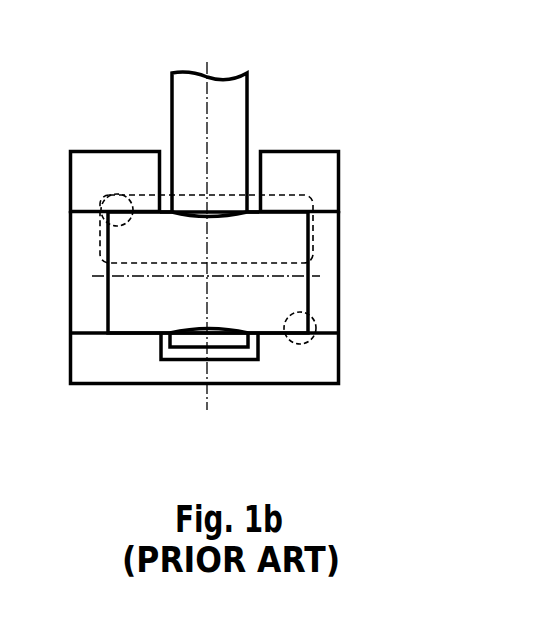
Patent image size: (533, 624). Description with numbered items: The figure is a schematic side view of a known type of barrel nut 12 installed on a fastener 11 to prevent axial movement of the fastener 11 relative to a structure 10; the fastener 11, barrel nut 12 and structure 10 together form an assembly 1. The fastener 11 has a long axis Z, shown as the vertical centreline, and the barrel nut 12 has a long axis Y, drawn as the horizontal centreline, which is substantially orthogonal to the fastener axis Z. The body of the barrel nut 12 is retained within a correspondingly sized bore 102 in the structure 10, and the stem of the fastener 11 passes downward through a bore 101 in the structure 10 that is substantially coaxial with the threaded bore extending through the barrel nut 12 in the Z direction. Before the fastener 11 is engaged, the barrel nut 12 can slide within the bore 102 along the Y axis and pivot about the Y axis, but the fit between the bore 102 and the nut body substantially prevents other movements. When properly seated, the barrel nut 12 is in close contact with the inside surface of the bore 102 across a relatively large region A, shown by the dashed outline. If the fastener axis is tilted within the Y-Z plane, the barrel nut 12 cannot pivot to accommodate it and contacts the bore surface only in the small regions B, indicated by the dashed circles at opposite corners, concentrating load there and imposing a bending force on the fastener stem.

The assembly 1 is at (86, 57).
The structure 10 is at (110, 177).
The bore 101 is at (263, 177).
The bore 102 is at (90, 315).
The fastener 11 is at (222, 127).
The barrel nut 12 is at (272, 283).
The region A is at (314, 228).
The regions B is at (100, 206).
The long axis Y is at (95, 272).
The long axis Z is at (212, 398).